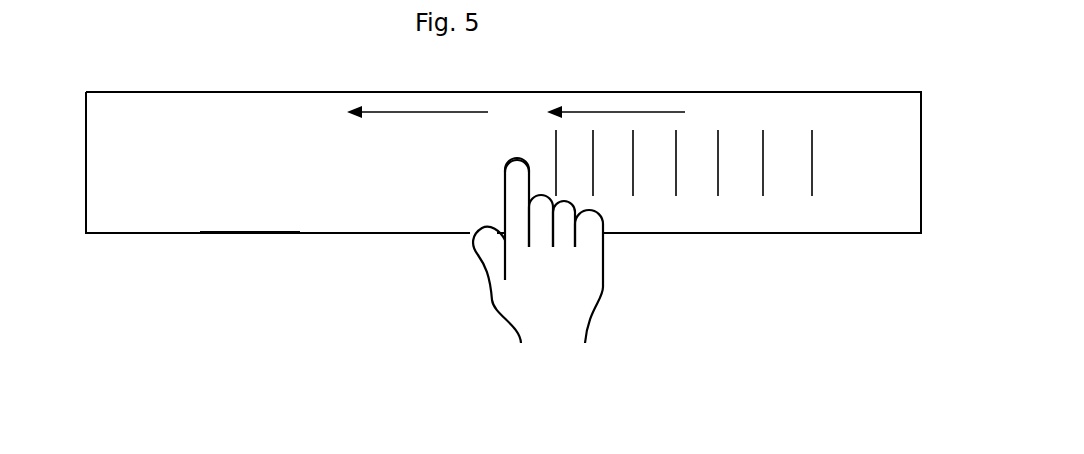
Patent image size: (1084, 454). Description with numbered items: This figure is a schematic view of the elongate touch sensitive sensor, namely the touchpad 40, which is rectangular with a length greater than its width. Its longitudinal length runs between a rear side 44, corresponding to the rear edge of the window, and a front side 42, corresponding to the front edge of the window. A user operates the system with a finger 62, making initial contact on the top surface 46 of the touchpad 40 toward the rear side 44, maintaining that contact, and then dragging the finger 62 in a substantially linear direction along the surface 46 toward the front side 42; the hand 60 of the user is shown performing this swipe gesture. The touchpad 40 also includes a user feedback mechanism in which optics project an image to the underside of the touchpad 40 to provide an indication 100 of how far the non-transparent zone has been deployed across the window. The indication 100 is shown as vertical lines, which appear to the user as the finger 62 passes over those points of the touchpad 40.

The touchpad 40 is at (327, 248).
The front side 42 is at (86, 153).
The rear side 44 is at (921, 172).
The top surface 46 is at (239, 197).
The user hand 60 is at (580, 285).
The finger 62 is at (515, 160).
The indication 100 is at (677, 166).